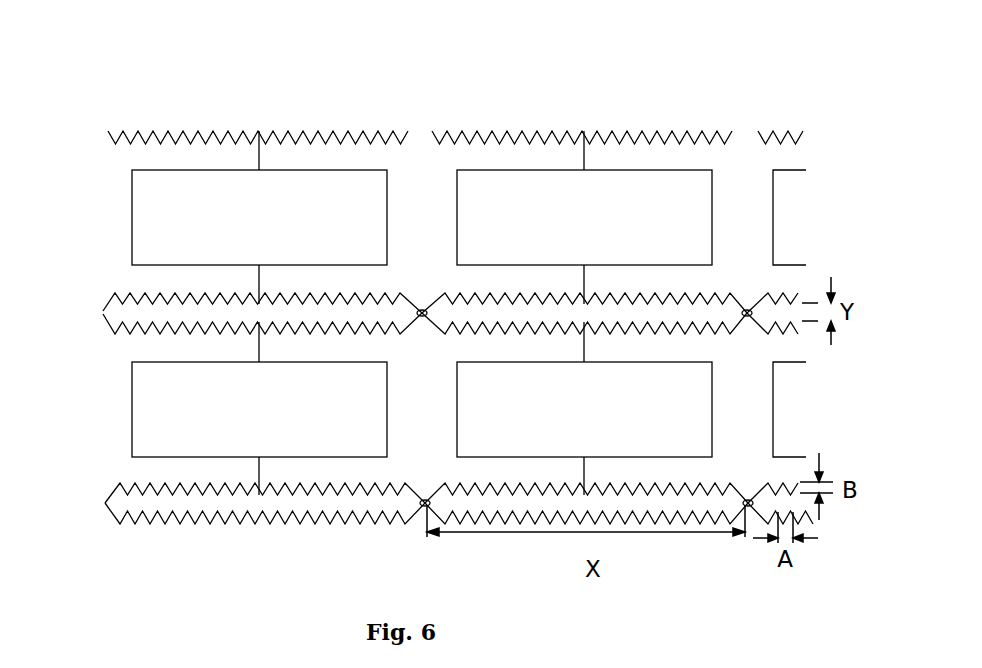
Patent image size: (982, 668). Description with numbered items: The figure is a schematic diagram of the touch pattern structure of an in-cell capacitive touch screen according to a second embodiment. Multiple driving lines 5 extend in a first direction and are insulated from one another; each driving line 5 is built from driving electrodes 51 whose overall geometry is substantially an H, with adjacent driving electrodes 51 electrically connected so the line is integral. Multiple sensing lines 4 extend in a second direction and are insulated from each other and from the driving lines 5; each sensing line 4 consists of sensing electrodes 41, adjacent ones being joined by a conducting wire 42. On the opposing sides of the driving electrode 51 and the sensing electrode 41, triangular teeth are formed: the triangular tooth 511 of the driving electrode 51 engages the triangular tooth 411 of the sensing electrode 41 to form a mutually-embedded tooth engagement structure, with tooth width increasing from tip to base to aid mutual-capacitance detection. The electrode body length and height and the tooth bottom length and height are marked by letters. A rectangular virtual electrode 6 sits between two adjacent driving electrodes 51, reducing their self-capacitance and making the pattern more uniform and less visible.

The sensing line 4 is at (237, 534).
The sensing electrode 41 is at (315, 508).
The triangular tooth of the sensing electrode 411 is at (148, 513).
The conducting wire 42 is at (425, 503).
The driving line 5 is at (427, 125).
The driving electrode 51 is at (427, 167).
The triangular tooth of the driving electrode 511 is at (542, 137).
The virtual electrode 6 is at (160, 193).